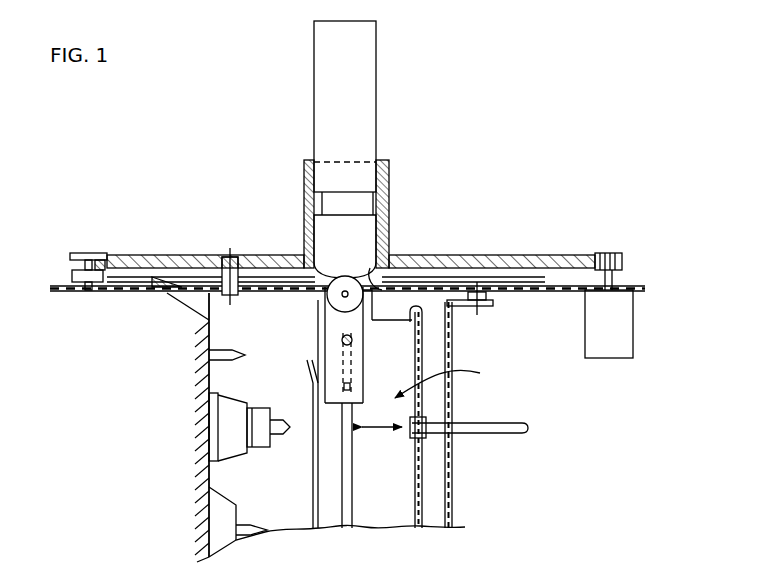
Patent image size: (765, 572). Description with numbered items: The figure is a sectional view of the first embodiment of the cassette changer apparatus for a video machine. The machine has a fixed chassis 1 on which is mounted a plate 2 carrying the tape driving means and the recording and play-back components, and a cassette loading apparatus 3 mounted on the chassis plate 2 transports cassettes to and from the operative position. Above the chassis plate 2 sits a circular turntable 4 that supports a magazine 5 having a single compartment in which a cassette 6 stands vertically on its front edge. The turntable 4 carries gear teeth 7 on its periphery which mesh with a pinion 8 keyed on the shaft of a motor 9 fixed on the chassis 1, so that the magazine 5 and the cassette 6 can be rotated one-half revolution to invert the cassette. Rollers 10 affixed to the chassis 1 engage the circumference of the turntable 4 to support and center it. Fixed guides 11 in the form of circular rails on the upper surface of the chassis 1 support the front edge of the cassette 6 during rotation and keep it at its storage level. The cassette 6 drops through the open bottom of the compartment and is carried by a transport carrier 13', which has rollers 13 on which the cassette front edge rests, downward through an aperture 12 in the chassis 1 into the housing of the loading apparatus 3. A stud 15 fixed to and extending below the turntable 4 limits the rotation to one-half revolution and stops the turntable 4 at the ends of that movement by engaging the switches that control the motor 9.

The fixed chassis 1 is at (152, 298).
The plate 2 is at (188, 425).
The cassette loading apparatus 3 is at (447, 378).
The circular turntable 4 is at (178, 255).
The magazine 5 is at (383, 208).
The cassette 6 is at (378, 80).
The gear teeth 7 is at (592, 258).
The pinion 8 is at (624, 268).
The motor 9 is at (606, 352).
The rollers 10 is at (88, 252).
The guides 11 is at (272, 277).
The aperture 12 is at (364, 288).
The rollers 13 is at (317, 313).
The carrier 13' is at (363, 407).
The stud 15 is at (230, 257).